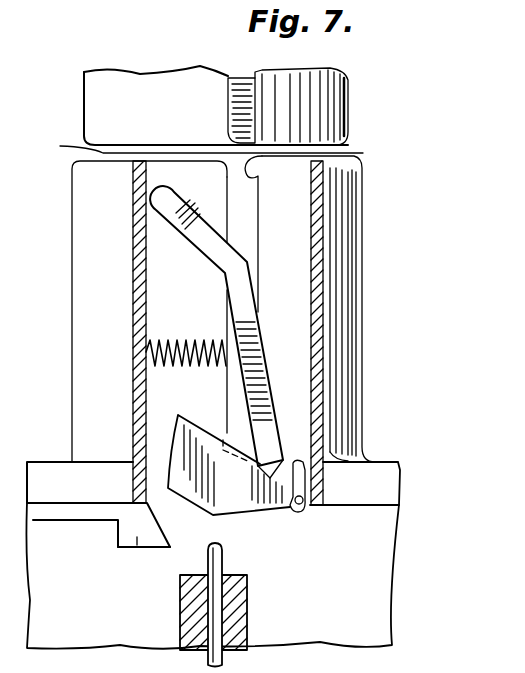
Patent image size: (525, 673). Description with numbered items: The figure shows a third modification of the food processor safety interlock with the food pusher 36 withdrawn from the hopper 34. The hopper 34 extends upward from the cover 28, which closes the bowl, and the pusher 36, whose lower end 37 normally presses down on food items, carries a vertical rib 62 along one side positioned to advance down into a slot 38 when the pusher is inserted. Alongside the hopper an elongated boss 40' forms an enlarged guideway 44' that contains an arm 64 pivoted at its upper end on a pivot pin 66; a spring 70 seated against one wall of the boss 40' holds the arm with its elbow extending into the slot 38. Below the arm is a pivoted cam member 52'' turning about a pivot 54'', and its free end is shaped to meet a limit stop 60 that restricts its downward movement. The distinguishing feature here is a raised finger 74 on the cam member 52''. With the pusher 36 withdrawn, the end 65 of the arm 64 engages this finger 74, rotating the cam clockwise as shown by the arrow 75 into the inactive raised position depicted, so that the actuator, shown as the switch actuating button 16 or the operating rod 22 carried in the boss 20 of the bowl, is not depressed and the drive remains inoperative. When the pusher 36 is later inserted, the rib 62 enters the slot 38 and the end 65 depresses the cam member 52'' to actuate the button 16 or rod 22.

The actuating button 16 is at (212, 576).
The vertical semicylindrical boss 20 is at (247, 610).
The operating rod 22 is at (180, 617).
The cover 28 is at (45, 457).
The hopper 34 is at (70, 260).
The food pusher 36 is at (348, 108).
The lower end 37 is at (60, 146).
The slot 38 is at (363, 153).
The elongated boss 40' is at (216, 333).
The guideway 44' is at (214, 332).
The pivoted cam member 52'' is at (229, 480).
The pivot 54'' is at (318, 510).
The limit stop 60 is at (132, 547).
The rib 62 is at (230, 103).
The arm 64 is at (272, 392).
The end of the arm 65 is at (286, 463).
The pivot pin 66 is at (156, 203).
The spring 70 is at (200, 338).
The raised finger 74 is at (300, 472).
The arrow 75 is at (251, 500).